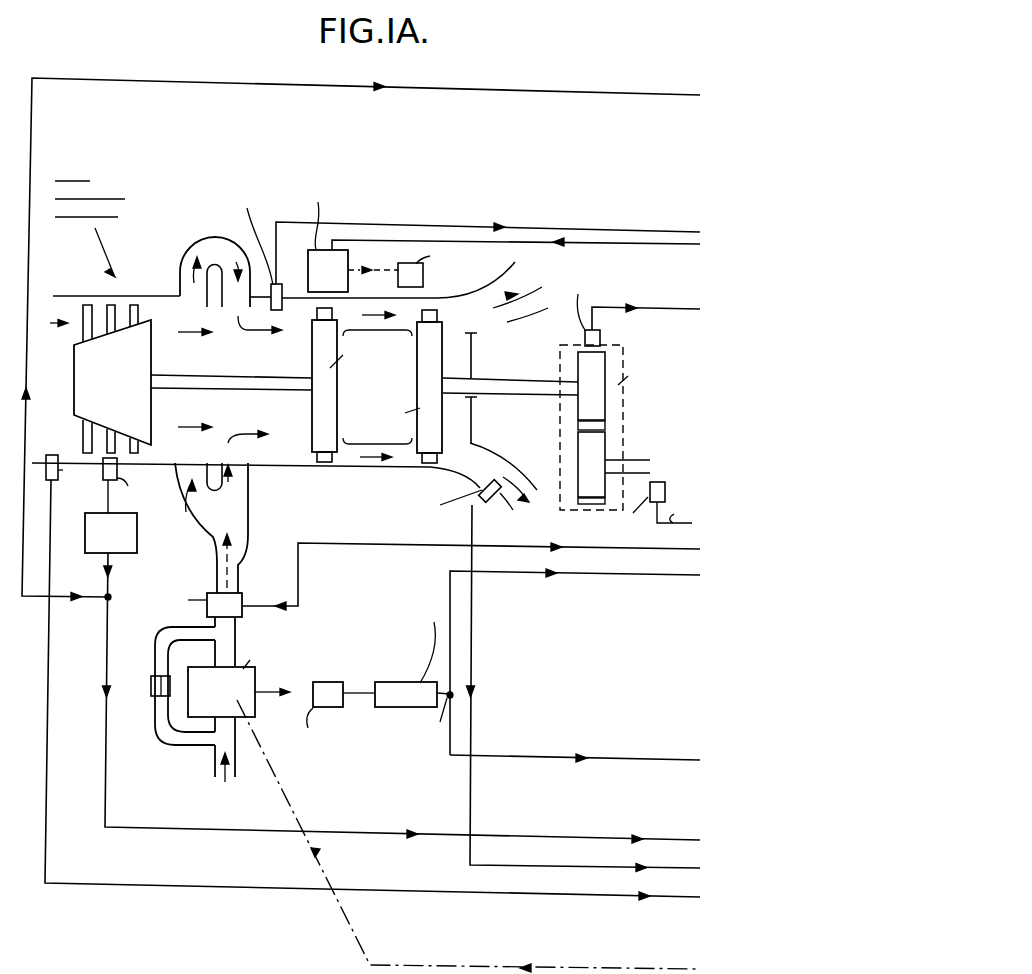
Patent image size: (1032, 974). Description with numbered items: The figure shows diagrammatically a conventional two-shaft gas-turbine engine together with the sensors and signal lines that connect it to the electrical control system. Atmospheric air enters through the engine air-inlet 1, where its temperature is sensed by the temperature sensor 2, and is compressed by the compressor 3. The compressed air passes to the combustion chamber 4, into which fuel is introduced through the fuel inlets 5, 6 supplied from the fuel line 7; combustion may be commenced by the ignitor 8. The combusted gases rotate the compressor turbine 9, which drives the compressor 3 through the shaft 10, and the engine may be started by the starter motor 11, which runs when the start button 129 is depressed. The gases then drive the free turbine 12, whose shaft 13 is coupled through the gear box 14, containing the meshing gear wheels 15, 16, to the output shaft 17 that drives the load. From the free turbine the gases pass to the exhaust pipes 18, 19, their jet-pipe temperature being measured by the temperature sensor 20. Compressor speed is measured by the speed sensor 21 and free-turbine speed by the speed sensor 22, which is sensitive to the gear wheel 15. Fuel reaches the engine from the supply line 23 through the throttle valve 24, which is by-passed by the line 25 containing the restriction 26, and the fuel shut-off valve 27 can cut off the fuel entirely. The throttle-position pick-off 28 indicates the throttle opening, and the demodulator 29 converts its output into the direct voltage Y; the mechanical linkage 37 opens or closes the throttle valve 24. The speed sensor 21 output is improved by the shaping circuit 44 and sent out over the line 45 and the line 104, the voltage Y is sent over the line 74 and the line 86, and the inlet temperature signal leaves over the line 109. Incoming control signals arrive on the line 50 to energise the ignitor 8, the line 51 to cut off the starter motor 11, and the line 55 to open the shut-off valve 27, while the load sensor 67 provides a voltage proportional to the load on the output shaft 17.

The engine air-inlet 1 is at (58, 392).
The temperature sensor 2 is at (56, 455).
The compressor 3 is at (120, 416).
The combustion chamber 4 is at (234, 368).
The fuel inlet 5 is at (244, 303).
The fuel inlet 6 is at (244, 483).
The fuel line 7 is at (233, 528).
The ignitor 8 is at (283, 308).
The compressor turbine 9 is at (313, 352).
The shaft 10 is at (254, 394).
The starter motor 11 is at (339, 283).
The free turbine 12 is at (437, 338).
The shaft 13 is at (506, 397).
The gear box 14 is at (560, 357).
The gear wheel 15 is at (607, 403).
The gear wheel 16 is at (583, 451).
The output shaft 17 is at (639, 459).
The exhaust pipe 18 is at (504, 327).
The exhaust pipe 19 is at (480, 458).
The temperature sensor 20 is at (545, 676).
The speed sensor 21 is at (118, 465).
The speed sensor 22 is at (601, 333).
The supply line 23 is at (213, 760).
The throttle valve 24 is at (232, 703).
The by-pass line 25 is at (156, 724).
The restriction 26 is at (153, 686).
The fuel shut-off valve 27 is at (244, 601).
The throttle-position pick-off 28 is at (329, 683).
The demodulator 29 is at (397, 683).
The mechanical linkage 37 is at (345, 917).
The shaping circuit 44 is at (137, 527).
The line 45 is at (169, 80).
The line 50 is at (531, 227).
The line 51 is at (667, 246).
The line 55 is at (681, 546).
The load sensor 67 is at (660, 489).
The line 74 is at (670, 574).
The line 86 is at (655, 758).
The line 104 is at (652, 838).
The line 109 is at (602, 898).
The start button 129 is at (419, 274).